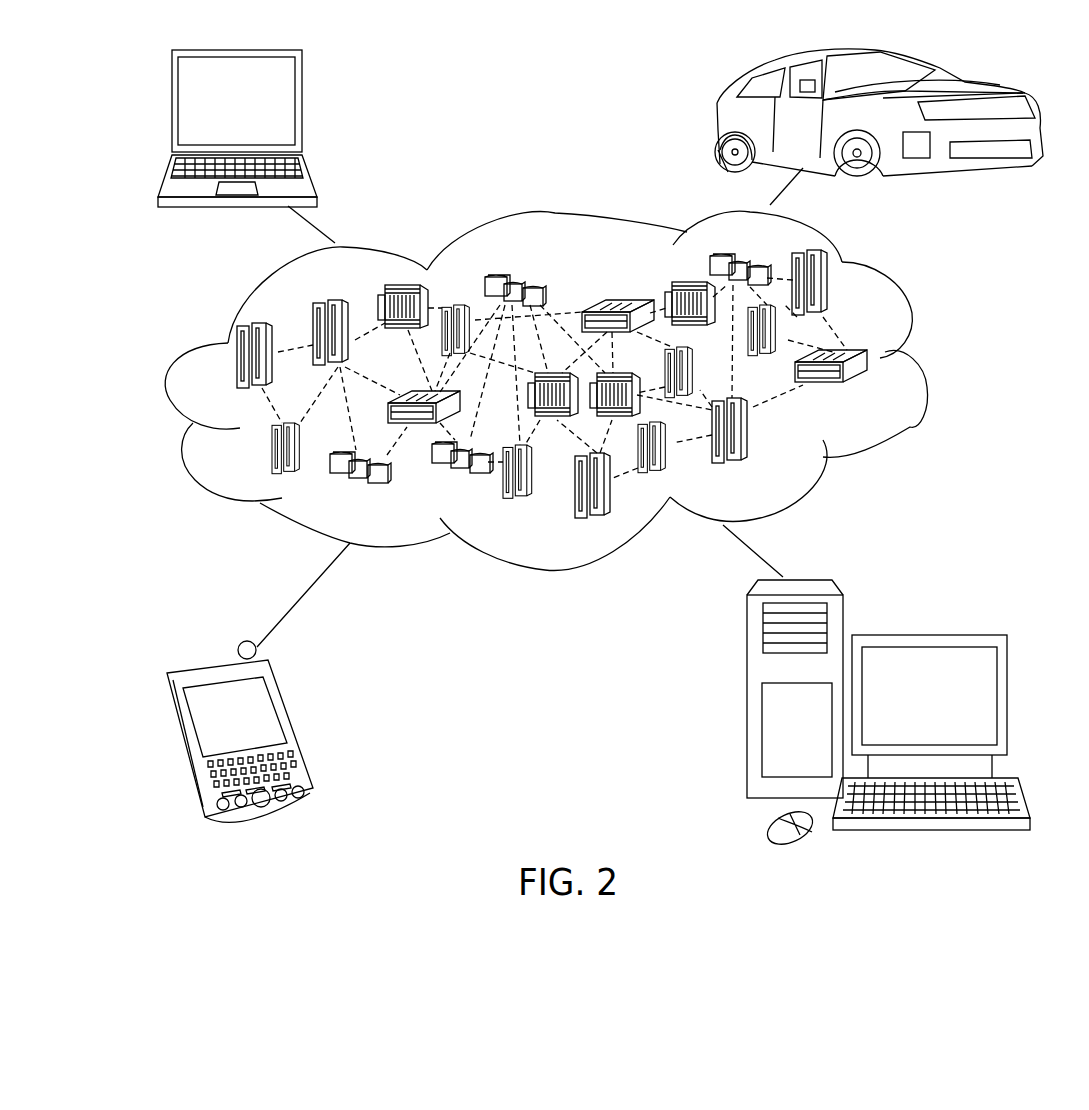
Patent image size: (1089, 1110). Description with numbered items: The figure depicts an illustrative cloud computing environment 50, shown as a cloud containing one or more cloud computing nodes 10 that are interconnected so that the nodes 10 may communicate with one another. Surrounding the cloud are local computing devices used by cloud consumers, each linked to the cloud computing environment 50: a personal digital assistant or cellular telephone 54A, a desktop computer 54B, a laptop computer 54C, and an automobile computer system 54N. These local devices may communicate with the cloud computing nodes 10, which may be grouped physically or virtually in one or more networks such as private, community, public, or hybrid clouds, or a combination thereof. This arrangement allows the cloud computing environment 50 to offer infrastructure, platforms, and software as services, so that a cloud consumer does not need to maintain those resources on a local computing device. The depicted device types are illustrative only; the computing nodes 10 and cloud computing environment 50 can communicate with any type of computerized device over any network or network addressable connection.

The cloud computing node 10 is at (868, 391).
The cloud computing environment 50 is at (908, 360).
The personal digital assistant or cellular telephone 54A is at (297, 728).
The desktop computer 54B is at (925, 632).
The laptop computer 54C is at (302, 108).
The automobile computer system 54N is at (718, 122).